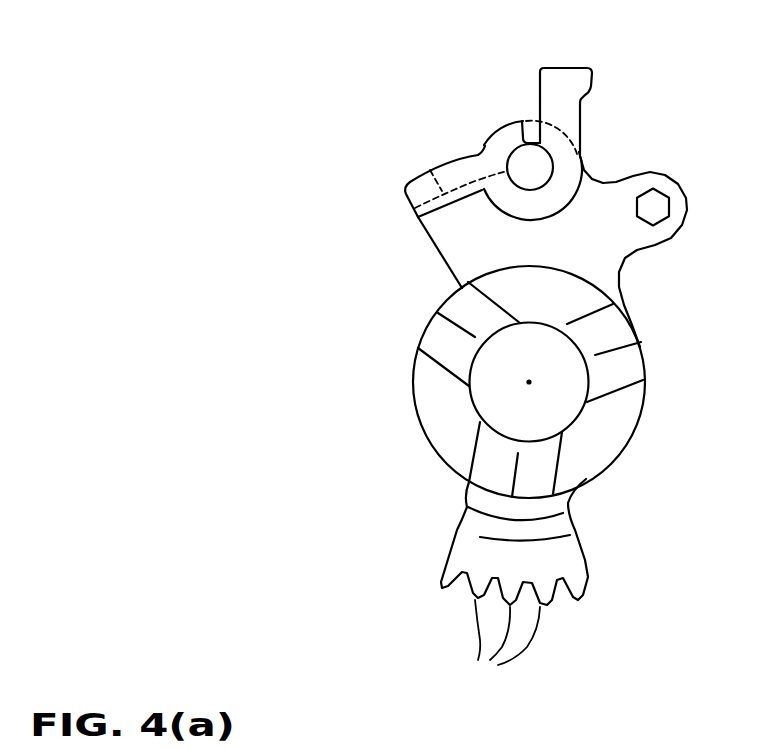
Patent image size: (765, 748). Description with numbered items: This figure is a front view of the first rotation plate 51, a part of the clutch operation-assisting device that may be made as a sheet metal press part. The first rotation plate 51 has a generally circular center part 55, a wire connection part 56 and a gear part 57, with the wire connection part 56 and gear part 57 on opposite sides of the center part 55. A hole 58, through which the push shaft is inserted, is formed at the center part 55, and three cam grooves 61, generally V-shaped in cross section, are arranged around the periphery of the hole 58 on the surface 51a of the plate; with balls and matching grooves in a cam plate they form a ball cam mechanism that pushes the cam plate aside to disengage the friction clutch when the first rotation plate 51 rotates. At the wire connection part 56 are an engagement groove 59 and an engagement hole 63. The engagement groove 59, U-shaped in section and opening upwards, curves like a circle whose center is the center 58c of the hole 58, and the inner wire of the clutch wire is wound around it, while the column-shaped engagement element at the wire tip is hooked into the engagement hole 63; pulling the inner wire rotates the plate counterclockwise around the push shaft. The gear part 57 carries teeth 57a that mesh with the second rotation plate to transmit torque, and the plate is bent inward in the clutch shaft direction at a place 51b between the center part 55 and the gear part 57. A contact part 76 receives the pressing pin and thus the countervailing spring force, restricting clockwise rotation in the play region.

The first rotation plate 51 is at (433, 123).
The surface 51a is at (438, 397).
The place 51b is at (482, 522).
The center part 55 is at (450, 445).
The wire connection part 56 is at (453, 238).
The gear part 57 is at (568, 555).
The teeth 57a is at (505, 651).
The hole 58 is at (568, 408).
The center 58c is at (529, 382).
The engagement groove 59 is at (430, 168).
The cam grooves 61 is at (438, 333).
The engagement hole 63 is at (545, 162).
The contact part 76 is at (578, 80).